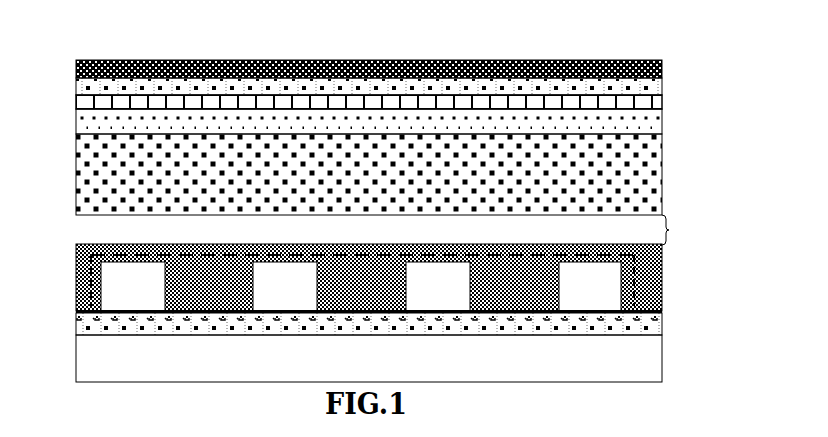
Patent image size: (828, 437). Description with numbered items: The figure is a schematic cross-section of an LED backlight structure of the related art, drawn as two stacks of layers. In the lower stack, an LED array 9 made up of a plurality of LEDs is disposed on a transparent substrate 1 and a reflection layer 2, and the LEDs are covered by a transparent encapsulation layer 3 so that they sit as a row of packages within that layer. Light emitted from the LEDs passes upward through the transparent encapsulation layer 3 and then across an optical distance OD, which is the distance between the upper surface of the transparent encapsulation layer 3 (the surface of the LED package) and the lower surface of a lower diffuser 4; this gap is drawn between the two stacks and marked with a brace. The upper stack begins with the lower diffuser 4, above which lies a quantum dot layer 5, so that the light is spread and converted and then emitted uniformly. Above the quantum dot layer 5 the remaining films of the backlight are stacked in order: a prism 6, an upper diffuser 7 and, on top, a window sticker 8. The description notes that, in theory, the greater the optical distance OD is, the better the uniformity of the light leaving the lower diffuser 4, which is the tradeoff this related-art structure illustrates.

The transparent substrate 1 is at (662, 358).
The reflection layer 2 is at (662, 322).
The transparent encapsulation layer 3 is at (662, 277).
The lower diffuser 4 is at (662, 173).
The quantum dot layer 5 is at (662, 120).
The prism 6 is at (662, 100).
The upper diffuser 7 is at (76, 85).
The window sticker 8 is at (375, 60).
The LED array 9 is at (91, 291).
The optical distance OD is at (682, 230).